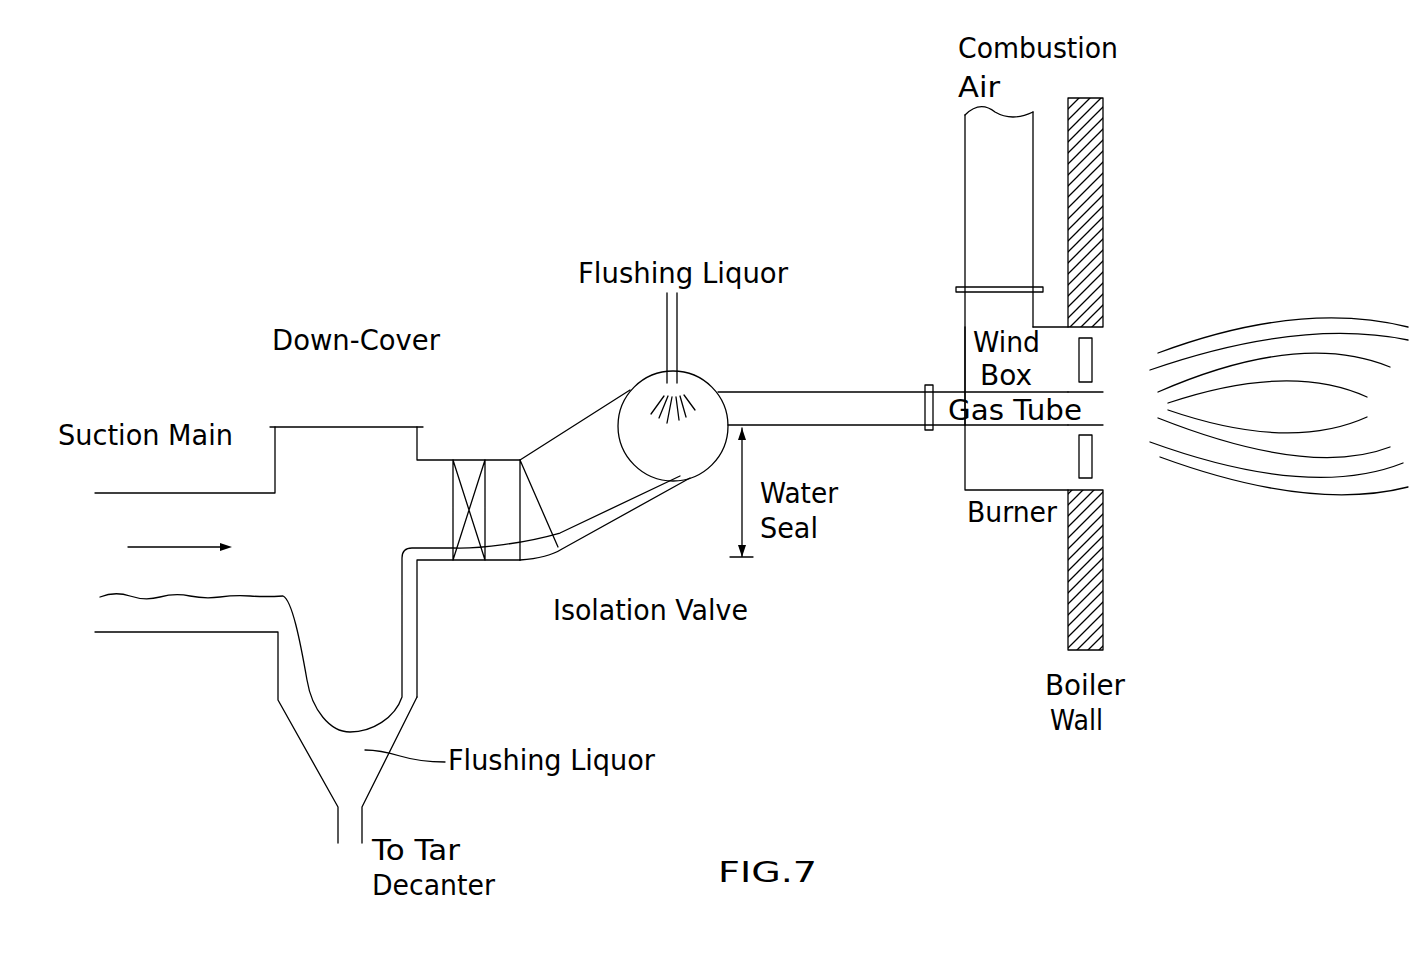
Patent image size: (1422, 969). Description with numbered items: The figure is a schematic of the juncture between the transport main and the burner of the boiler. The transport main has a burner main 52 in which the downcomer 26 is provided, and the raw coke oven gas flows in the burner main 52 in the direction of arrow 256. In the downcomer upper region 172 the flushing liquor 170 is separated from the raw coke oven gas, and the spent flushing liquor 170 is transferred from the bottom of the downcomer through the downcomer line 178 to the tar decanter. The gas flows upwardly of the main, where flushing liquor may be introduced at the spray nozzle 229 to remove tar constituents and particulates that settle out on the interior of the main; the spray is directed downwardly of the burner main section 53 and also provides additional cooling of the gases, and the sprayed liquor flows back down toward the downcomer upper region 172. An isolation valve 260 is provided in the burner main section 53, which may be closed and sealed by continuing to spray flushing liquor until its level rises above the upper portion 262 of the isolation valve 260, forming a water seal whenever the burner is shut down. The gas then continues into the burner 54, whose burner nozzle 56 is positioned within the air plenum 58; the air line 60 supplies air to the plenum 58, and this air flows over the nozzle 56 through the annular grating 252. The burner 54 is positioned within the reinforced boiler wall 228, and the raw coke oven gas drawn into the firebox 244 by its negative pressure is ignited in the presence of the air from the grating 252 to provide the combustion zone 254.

The burner main 52 is at (250, 490).
The downcomer 26 is at (405, 419).
The downcomer upper region 172 is at (368, 538).
The arrow 256 is at (180, 533).
The isolation valve 260 is at (482, 523).
The upper portion of the isolation valve 262 is at (495, 470).
The flushing liquor 170 is at (150, 622).
The downcomer line 178 is at (337, 825).
The flushing liquor spray nozzle 229 is at (690, 378).
The burner main section 53 is at (813, 390).
The burner nozzle 56 is at (1102, 392).
The air line 60 is at (965, 150).
The air plenum 58 is at (970, 315).
The burner 54 is at (947, 466).
The annular grating 252 is at (1088, 347).
The reinforced boiler wall 228 is at (1095, 112).
The firebox 244 is at (1243, 212).
The combustion zone 254 is at (1247, 333).